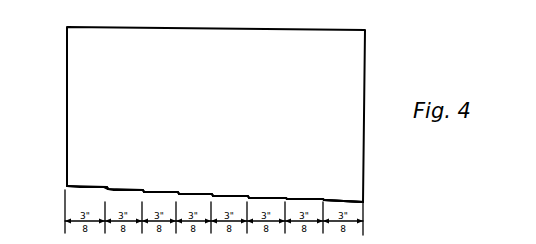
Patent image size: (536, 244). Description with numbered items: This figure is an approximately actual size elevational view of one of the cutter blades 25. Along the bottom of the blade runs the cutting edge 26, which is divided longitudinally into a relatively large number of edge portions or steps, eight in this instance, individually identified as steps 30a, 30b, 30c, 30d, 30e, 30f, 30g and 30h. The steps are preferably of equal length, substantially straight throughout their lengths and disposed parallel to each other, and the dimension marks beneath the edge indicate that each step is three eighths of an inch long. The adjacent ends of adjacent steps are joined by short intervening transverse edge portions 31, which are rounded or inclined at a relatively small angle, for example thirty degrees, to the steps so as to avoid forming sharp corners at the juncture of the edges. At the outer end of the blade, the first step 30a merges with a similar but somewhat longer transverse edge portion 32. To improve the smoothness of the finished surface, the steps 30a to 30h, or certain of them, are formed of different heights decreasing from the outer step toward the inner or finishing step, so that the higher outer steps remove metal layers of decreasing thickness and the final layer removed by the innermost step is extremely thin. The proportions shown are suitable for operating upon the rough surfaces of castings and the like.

The cutter blade 25 is at (350, 73).
The cutting edge 26 is at (343, 202).
The transverse edge portion 32 is at (65, 188).
The transverse edge portion 31 is at (111, 188).
The step 30a is at (87, 187).
The step 30b is at (127, 189).
The step 30c is at (160, 192).
The step 30d is at (192, 194).
The step 30e is at (233, 196).
The step 30f is at (267, 198).
The step 30g is at (303, 199).
The step 30h is at (338, 200).